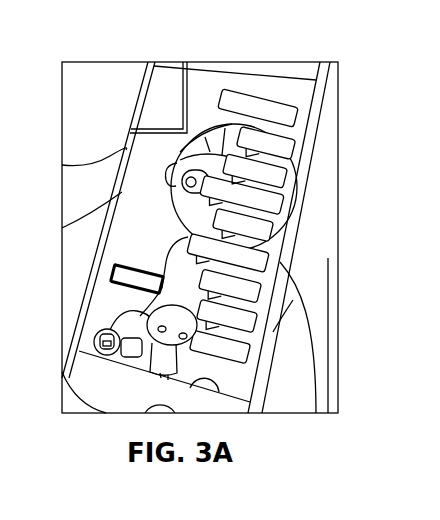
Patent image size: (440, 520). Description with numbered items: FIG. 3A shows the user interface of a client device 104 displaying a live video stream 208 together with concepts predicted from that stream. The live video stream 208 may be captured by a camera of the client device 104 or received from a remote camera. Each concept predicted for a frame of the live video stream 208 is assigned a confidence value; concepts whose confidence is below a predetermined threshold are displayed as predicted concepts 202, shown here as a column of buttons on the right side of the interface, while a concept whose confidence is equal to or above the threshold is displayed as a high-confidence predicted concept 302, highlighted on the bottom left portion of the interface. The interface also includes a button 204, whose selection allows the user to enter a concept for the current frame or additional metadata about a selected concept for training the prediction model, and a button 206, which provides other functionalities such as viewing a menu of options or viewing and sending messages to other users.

The client device 104 is at (203, 53).
The predicted concepts 202 is at (272, 142).
The button 204 is at (172, 355).
The button 206 is at (106, 348).
The live video stream 208 is at (163, 110).
The high-confidence predicted concept 302 is at (112, 282).